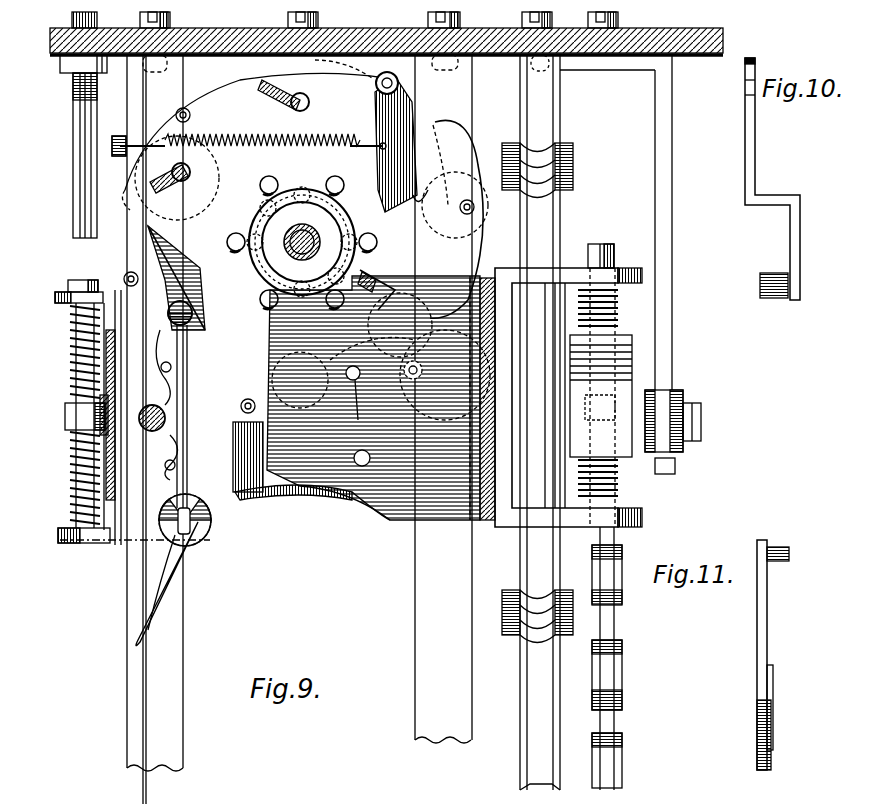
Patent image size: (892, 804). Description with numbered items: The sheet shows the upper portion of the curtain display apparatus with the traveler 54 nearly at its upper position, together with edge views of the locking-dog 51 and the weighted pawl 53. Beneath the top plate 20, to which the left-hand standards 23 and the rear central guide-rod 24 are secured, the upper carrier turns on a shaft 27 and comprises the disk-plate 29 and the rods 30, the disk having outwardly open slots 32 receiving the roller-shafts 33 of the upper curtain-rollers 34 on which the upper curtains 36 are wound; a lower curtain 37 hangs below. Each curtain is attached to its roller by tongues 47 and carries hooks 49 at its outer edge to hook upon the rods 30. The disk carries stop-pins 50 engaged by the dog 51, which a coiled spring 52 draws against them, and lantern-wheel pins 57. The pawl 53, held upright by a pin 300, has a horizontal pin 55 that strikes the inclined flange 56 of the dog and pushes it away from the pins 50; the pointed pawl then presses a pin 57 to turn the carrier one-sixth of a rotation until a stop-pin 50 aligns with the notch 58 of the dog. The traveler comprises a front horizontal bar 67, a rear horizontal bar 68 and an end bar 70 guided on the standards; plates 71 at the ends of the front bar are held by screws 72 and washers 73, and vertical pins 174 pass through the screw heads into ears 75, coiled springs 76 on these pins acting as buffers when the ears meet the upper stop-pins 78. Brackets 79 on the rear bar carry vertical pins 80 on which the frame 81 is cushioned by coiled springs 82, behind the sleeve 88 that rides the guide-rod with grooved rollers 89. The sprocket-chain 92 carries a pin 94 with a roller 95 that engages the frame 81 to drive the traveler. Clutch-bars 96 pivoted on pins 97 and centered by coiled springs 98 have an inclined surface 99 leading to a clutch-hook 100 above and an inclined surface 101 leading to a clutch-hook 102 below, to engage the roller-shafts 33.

In FIG. 9, the top plate 20 is at (386, 32).
In FIG. 9, the left-hand standard 23 is at (184, 643).
In FIG. 9, the rear central guide-rod 24 is at (562, 98).
In FIG. 9, the shaft 27 is at (272, 268).
In FIG. 9, the disk-plate 29 is at (287, 279).
In FIG. 9, the rod 30 is at (185, 108).
In FIG. 9, the slot 32 is at (255, 50).
In FIG. 9, the roller-shaft 33 is at (310, 102).
In FIG. 9, the upper curtain-roller 34 is at (480, 124).
In FIG. 9, the upper curtain 36 is at (185, 135).
In FIG. 9, the lower curtain 37 is at (146, 728).
In FIG. 9, the tongue 47 is at (212, 537).
In FIG. 9, the hook 49 is at (128, 272).
In FIG. 9, the pin 50 is at (272, 180).
In FIG. 9, the locking-dog 51 is at (425, 243).
In FIG. 10, the locking-dog 51 is at (772, 179).
In FIG. 9, the coiled spring 52 is at (212, 135).
In FIG. 9, the pawl 53 is at (343, 413).
In FIG. 11, the pawl 53 is at (757, 645).
In FIG. 9, the traveler 54 is at (380, 505).
In FIG. 9, the pin 55 is at (375, 283).
In FIG. 11, the pin 55 is at (791, 551).
In FIG. 9, the inclined flange 56 is at (355, 262).
In FIG. 10, the inclined flange 56 is at (760, 282).
In FIG. 9, the pin 57 is at (262, 222).
In FIG. 9, the notch 58 is at (350, 235).
In FIG. 9, the front horizontal bar 67 is at (118, 492).
In FIG. 9, the rear horizontal bar 68 is at (460, 520).
In FIG. 9, the end bar 70 is at (340, 526).
In FIG. 9, the plate 71 is at (105, 536).
In FIG. 9, the screw 72 is at (65, 413).
In FIG. 9, the washer 73 is at (72, 448).
In FIG. 9, the ear 75 is at (62, 304).
In FIG. 9, the coiled spring 76 is at (72, 358).
In FIG. 9, the stop-pin 78 is at (72, 168).
In FIG. 9, the bracket 79 is at (500, 356).
In FIG. 9, the vertical pin 80 is at (607, 245).
In FIG. 9, the frame 81 is at (602, 396).
In FIG. 9, the coiled spring 82 is at (618, 305).
In FIG. 9, the sleeve 88 is at (562, 207).
In FIG. 9, the grooved roller 89 is at (565, 150).
In FIG. 9, the sprocket-chain 92 is at (633, 681).
In FIG. 9, the pin 94 is at (672, 395).
In FIG. 9, the roller 95 is at (628, 222).
In FIG. 9, the clutch-bar 96 is at (153, 405).
In FIG. 9, the pin 97 is at (155, 432).
In FIG. 9, the coiled spring 98 is at (160, 392).
In FIG. 9, the inclined surface 99 is at (178, 255).
In FIG. 9, the clutch-hook 100 is at (195, 325).
In FIG. 9, the inclined surface 101 is at (172, 598).
In FIG. 9, the clutch-hook 102 is at (200, 508).
In FIG. 9, the vertical pin 174 is at (62, 290).
In FIG. 9, the pin 300 is at (364, 425).